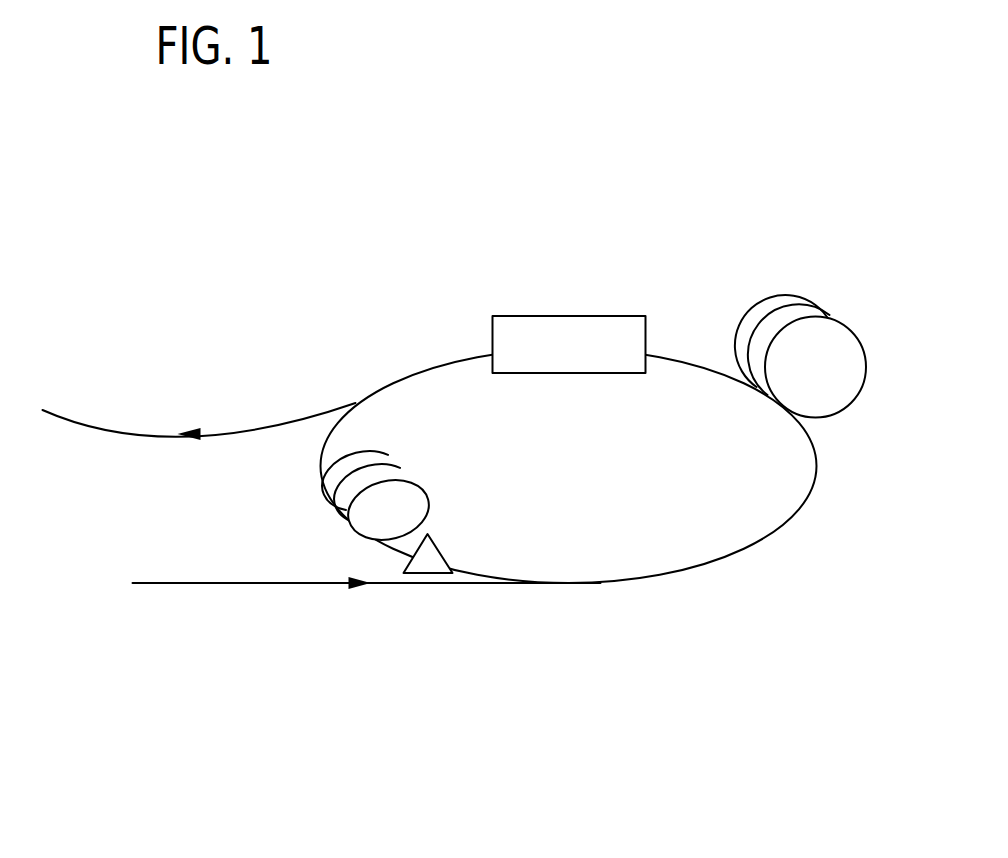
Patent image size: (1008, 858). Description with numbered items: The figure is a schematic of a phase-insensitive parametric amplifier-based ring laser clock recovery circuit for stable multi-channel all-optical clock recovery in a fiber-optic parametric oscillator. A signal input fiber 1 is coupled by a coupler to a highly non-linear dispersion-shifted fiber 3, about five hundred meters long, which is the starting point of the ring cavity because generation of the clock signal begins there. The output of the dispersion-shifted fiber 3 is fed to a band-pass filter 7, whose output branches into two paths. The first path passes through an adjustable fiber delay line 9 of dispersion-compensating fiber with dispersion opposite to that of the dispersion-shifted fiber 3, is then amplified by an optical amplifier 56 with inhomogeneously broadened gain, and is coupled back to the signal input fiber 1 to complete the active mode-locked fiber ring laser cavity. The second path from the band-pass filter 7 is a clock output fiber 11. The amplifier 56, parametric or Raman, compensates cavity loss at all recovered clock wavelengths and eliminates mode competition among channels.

The signal input fiber 1 is at (285, 584).
The highly non-linear dispersion-shifted fiber 3 is at (833, 320).
The band-pass filter 7 is at (570, 315).
The adjustable fiber delay line 9 is at (330, 497).
The clock output fiber 11 is at (104, 424).
The optical amplifier 56 is at (433, 553).